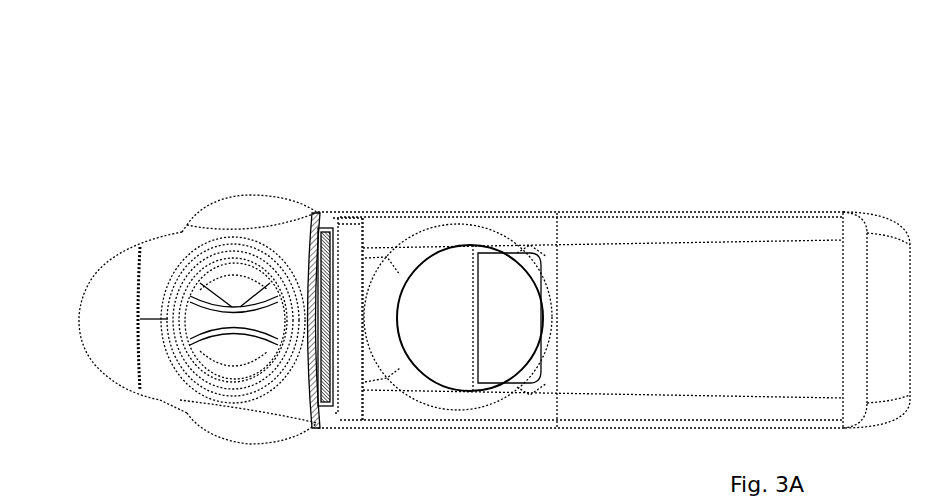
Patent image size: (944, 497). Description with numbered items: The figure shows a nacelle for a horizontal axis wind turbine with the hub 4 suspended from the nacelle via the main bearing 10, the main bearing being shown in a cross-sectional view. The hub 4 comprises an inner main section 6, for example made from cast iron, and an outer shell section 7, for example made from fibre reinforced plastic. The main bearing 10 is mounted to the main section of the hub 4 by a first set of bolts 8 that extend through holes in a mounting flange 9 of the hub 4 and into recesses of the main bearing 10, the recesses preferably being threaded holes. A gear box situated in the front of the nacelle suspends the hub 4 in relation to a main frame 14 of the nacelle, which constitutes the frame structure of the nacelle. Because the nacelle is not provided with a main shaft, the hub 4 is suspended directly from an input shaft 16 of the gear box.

The hub 4 is at (121, 200).
The inner main section 6 is at (228, 322).
The outer shell section 7 is at (157, 375).
The first set of bolts 8 is at (318, 367).
The mounting flange 9 is at (337, 247).
The main bearing 10 is at (350, 243).
The main frame 14 is at (458, 360).
The input shaft 16 is at (531, 371).